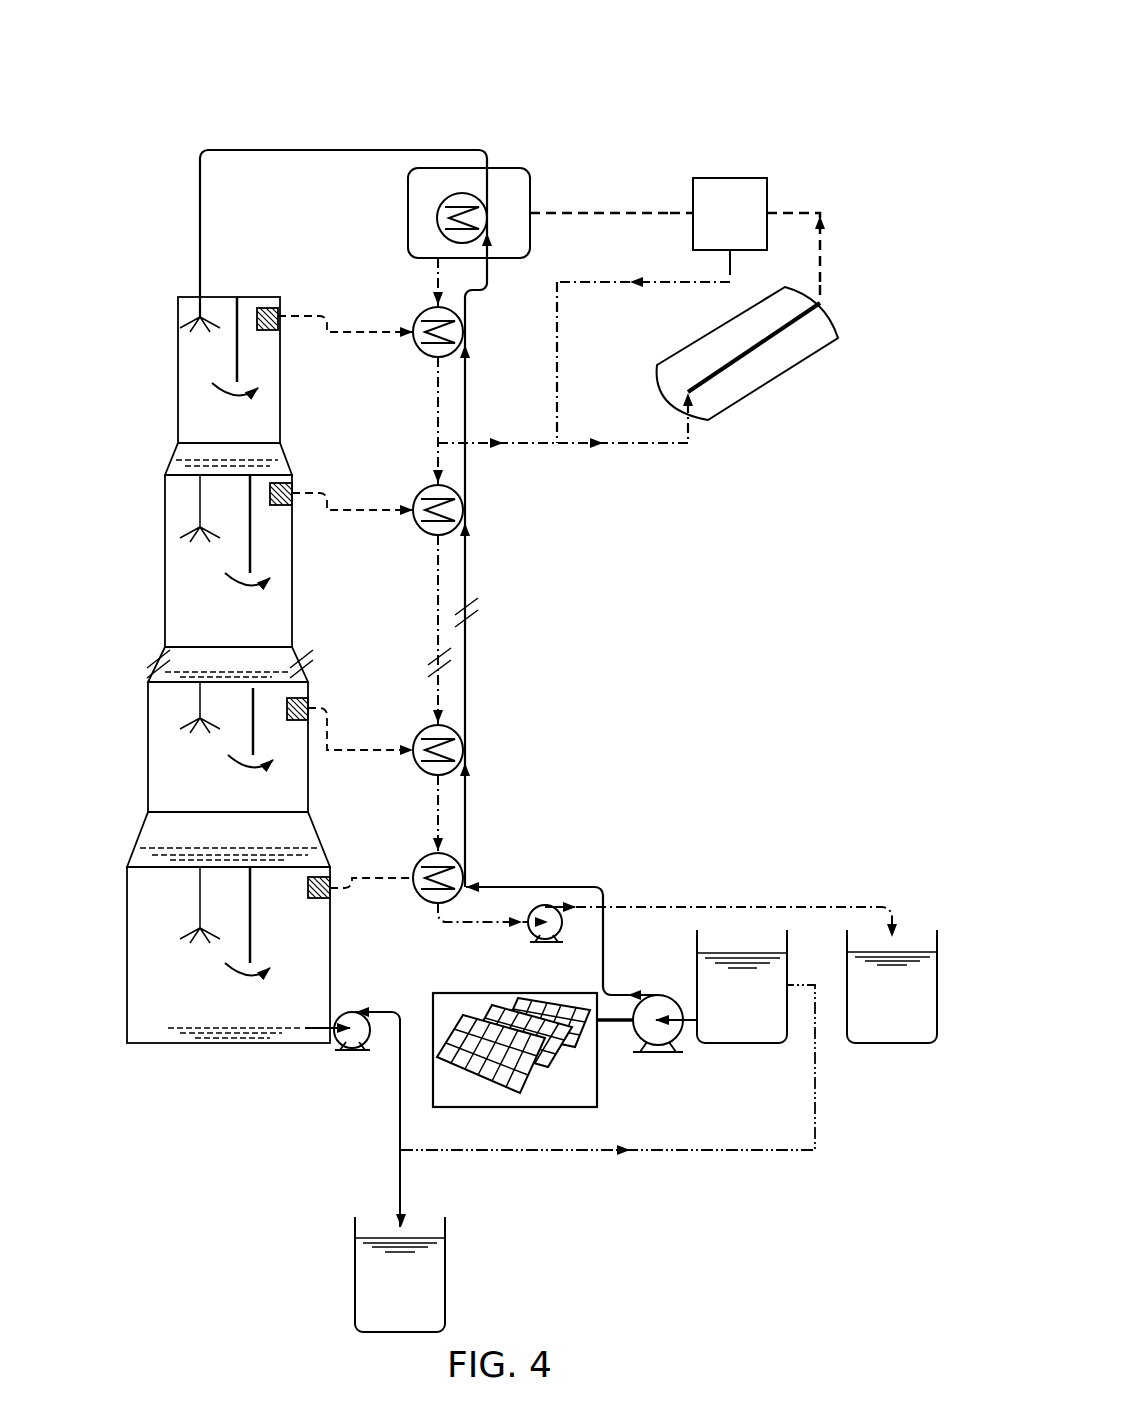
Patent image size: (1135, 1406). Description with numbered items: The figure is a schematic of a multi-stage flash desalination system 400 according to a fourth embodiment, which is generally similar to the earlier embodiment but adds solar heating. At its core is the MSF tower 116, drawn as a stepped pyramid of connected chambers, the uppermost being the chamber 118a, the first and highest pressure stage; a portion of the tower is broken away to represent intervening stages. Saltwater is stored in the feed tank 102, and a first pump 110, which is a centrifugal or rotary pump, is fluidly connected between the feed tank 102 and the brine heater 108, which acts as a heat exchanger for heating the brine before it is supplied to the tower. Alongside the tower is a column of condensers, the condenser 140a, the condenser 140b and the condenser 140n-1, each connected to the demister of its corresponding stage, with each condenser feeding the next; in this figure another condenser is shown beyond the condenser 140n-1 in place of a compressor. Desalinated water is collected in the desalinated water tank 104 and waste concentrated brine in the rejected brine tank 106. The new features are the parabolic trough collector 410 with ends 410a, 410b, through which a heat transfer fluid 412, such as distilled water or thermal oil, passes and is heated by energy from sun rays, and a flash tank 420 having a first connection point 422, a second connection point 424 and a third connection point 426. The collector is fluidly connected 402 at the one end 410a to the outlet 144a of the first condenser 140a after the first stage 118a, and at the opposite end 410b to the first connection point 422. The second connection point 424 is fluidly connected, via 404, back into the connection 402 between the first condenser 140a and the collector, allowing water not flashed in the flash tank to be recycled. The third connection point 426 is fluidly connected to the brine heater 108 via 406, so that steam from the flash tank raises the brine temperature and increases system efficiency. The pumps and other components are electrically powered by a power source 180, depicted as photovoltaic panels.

The multi-stage flash desalination system 400 is at (778, 70).
The MSF tower 116 is at (170, 272).
The chamber 118a is at (178, 370).
The brine heater 108 is at (437, 213).
The condenser 140a is at (418, 310).
The outlet 144a is at (433, 358).
The condenser 140b is at (418, 492).
The condenser 140n-1 is at (420, 728).
The flash tank 420 is at (730, 178).
The fluid connection 406 is at (587, 212).
The third connection point 426 is at (690, 212).
The first connection point 422 is at (770, 208).
The second connection point 424 is at (728, 265).
The fluid connection 404 is at (558, 313).
The fluid connection 402 is at (625, 447).
The parabolic trough collector 410 is at (772, 382).
The end of parabolic trough collector 410a is at (684, 397).
The end of parabolic trough collector 410b is at (822, 303).
The heat transfer fluid 412 is at (778, 340).
The first pump 110 is at (660, 1052).
The feed tank 102 is at (742, 1043).
The desalinated water tank 104 is at (893, 1043).
The rejected brine tank 106 is at (355, 1270).
The power source 180 is at (528, 1107).